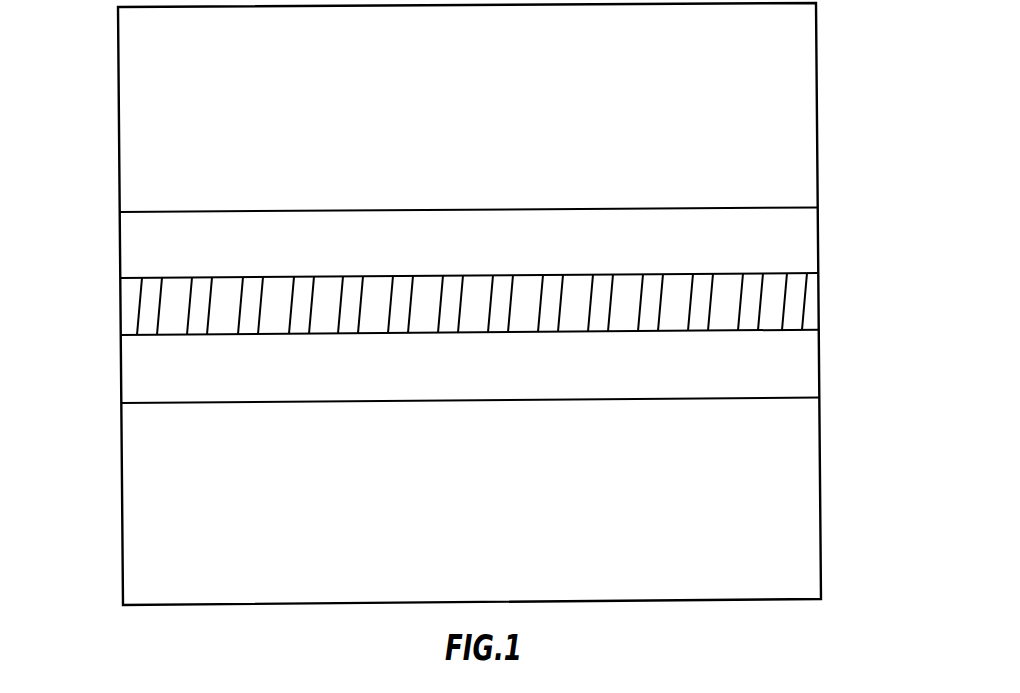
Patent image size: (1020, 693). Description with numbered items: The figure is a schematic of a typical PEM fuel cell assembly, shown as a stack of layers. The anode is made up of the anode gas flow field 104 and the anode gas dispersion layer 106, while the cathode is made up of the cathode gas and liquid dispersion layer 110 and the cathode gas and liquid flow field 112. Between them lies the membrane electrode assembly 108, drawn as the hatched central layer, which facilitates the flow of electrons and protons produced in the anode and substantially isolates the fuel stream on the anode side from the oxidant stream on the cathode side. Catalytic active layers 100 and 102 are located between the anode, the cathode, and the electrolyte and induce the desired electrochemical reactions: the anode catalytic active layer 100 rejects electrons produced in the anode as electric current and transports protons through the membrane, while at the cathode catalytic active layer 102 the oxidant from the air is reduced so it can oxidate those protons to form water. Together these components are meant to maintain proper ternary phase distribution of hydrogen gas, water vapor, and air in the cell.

The anode catalytic active layer 100 is at (181, 277).
The cathode catalytic active layer 102 is at (221, 337).
The anode gas flow field 104 is at (822, 108).
The anode gas dispersion layer 106 is at (822, 226).
The membrane electrode assembly 108 is at (822, 296).
The cathode gas and liquid dispersion layer 110 is at (822, 365).
The cathode gas and liquid flow field 112 is at (823, 477).